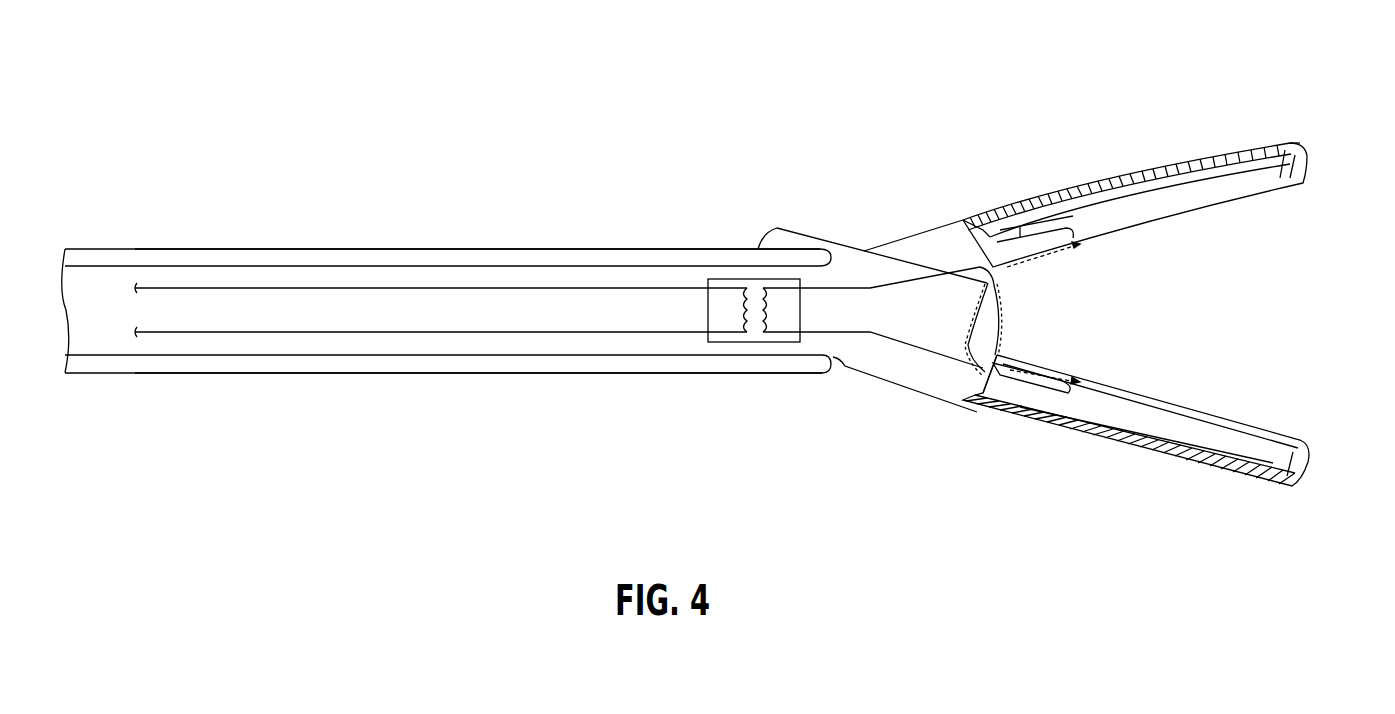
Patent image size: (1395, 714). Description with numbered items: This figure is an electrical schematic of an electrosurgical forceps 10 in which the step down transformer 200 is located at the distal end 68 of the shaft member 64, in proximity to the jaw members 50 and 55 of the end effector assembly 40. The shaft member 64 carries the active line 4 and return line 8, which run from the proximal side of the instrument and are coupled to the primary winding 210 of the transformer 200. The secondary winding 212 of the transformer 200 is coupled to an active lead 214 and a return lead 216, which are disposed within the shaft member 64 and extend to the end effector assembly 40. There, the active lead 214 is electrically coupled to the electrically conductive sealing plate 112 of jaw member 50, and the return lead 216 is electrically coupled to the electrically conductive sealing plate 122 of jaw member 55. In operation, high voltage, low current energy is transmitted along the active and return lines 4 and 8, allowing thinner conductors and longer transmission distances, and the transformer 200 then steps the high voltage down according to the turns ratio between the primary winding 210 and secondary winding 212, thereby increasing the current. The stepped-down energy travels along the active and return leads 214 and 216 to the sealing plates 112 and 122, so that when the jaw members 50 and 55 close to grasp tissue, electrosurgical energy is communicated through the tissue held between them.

The active line 4 is at (273, 284).
The return line 8 is at (273, 336).
The electrosurgical forceps 10 is at (560, 222).
The end effector assembly 40 is at (1299, 104).
The jaw member 50 is at (1183, 158).
The jaw member 55 is at (1077, 440).
The shaft member 64 is at (465, 248).
The distal end of shaft 68 is at (582, 373).
The electrically conductive sealing plate 112 is at (1200, 216).
The electrically conductive sealing plate 122 is at (1207, 410).
The step down transformer 200 is at (722, 345).
The primary winding 210 is at (722, 280).
The secondary winding 212 is at (788, 345).
The active lead 214 is at (1012, 212).
The return lead 216 is at (1017, 413).